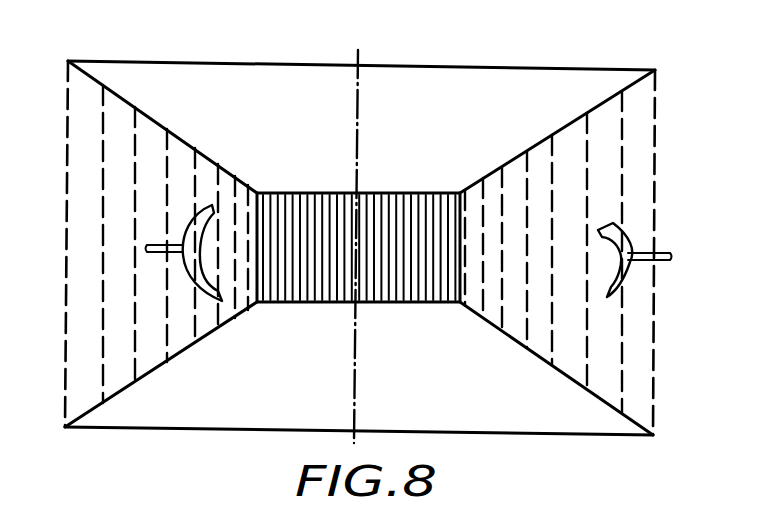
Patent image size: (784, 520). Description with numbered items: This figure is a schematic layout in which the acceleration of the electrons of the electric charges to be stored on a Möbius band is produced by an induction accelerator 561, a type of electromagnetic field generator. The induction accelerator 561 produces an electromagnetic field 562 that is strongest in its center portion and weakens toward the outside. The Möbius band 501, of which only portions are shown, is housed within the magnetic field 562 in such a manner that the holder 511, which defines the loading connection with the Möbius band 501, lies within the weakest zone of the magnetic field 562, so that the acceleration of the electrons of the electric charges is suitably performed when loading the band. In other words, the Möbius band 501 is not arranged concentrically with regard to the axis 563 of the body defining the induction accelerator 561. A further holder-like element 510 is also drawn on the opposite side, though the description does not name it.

The Möbius band 501 is at (193, 222).
The left stem 510 is at (148, 255).
The holder 511 is at (668, 262).
The induction accelerator 561 is at (518, 88).
The electromagnetic field 562 is at (637, 129).
The axis 563 is at (360, 60).